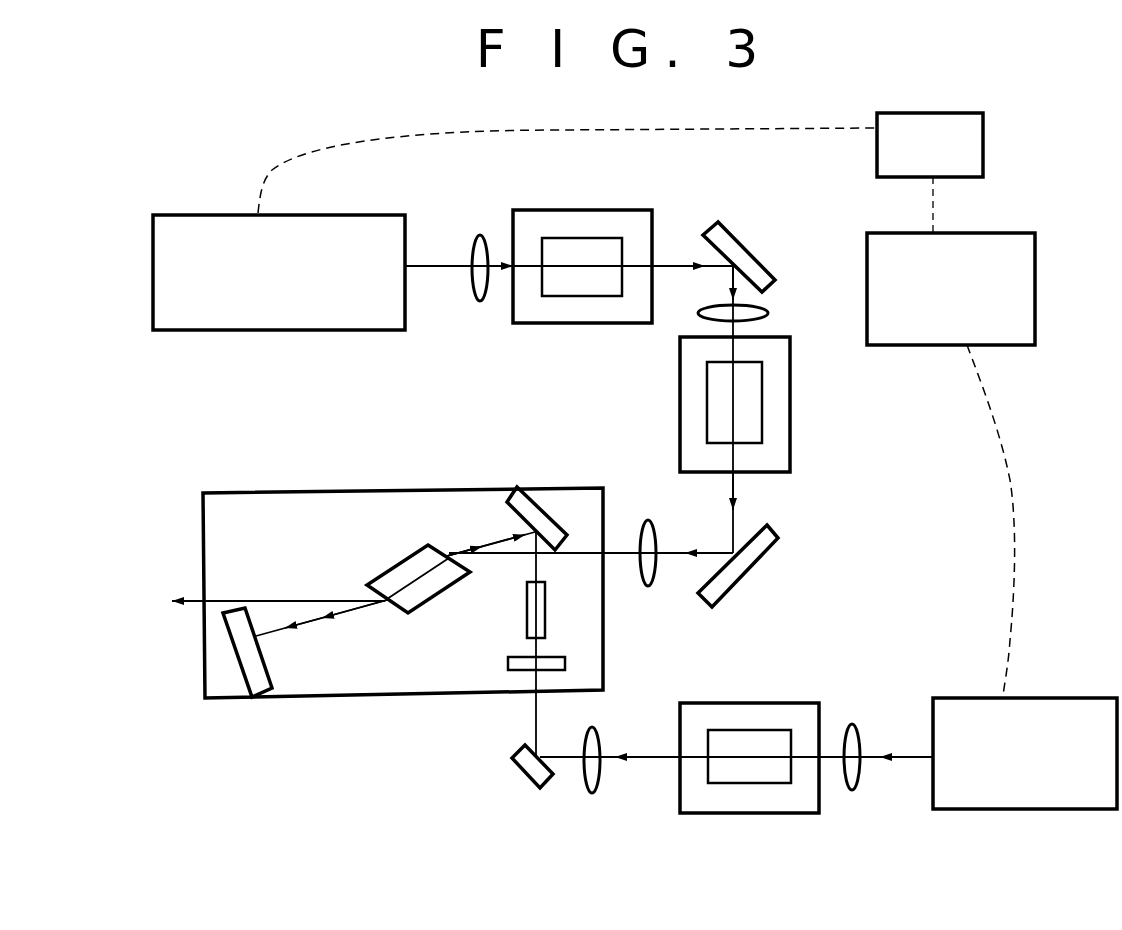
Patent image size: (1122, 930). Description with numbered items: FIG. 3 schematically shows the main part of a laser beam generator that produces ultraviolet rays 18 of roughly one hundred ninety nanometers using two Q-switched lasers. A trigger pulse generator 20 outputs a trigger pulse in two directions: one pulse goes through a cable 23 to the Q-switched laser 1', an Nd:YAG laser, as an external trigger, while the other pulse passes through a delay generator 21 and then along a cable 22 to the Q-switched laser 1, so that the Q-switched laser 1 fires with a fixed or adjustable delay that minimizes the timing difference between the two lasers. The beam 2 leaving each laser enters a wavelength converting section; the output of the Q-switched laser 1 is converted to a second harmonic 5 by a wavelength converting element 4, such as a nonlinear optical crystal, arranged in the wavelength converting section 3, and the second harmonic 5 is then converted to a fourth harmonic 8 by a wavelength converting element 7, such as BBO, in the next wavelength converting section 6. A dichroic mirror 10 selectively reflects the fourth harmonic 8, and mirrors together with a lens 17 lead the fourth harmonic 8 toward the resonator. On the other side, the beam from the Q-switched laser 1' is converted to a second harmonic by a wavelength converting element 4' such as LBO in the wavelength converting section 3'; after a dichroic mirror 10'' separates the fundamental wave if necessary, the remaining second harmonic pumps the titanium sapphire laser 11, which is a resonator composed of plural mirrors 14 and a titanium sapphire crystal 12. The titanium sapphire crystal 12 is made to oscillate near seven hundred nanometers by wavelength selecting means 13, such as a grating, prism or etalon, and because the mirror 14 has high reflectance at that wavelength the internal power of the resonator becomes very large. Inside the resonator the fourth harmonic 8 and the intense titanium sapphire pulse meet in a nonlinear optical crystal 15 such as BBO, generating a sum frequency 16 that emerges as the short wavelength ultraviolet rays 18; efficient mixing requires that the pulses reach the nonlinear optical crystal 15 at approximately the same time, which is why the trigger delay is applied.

The Q-switched laser 1 is at (279, 299).
The Q-switched laser 1' is at (1025, 771).
The beam 2 is at (429, 272).
The wavelength converting section 3 is at (582, 293).
The wavelength converting section 3' is at (770, 779).
The wavelength converting element 4 is at (582, 230).
The wavelength converting element 4' is at (749, 721).
The second harmonic 5 is at (665, 262).
The wavelength converting section 6 is at (785, 400).
The wavelength converting element 7 is at (717, 406).
The fourth harmonic 8 is at (745, 482).
The dichroic mirror 10 is at (749, 412).
The dichroic mirror 10'' is at (500, 782).
The titanium sapphire laser 11 is at (268, 500).
The titanium sapphire crystal 12 is at (547, 604).
The wavelength selecting means 13 is at (540, 512).
The mirror 14 is at (266, 668).
The nonlinear optical crystal 15 is at (405, 569).
The sum frequency 16 is at (297, 600).
The lens 17 is at (478, 236).
The ultraviolet rays 18 is at (257, 603).
The trigger pulse generator 20 is at (1000, 345).
The delay generator 21 is at (981, 139).
The cable 22 is at (262, 172).
The cable 23 is at (1010, 564).